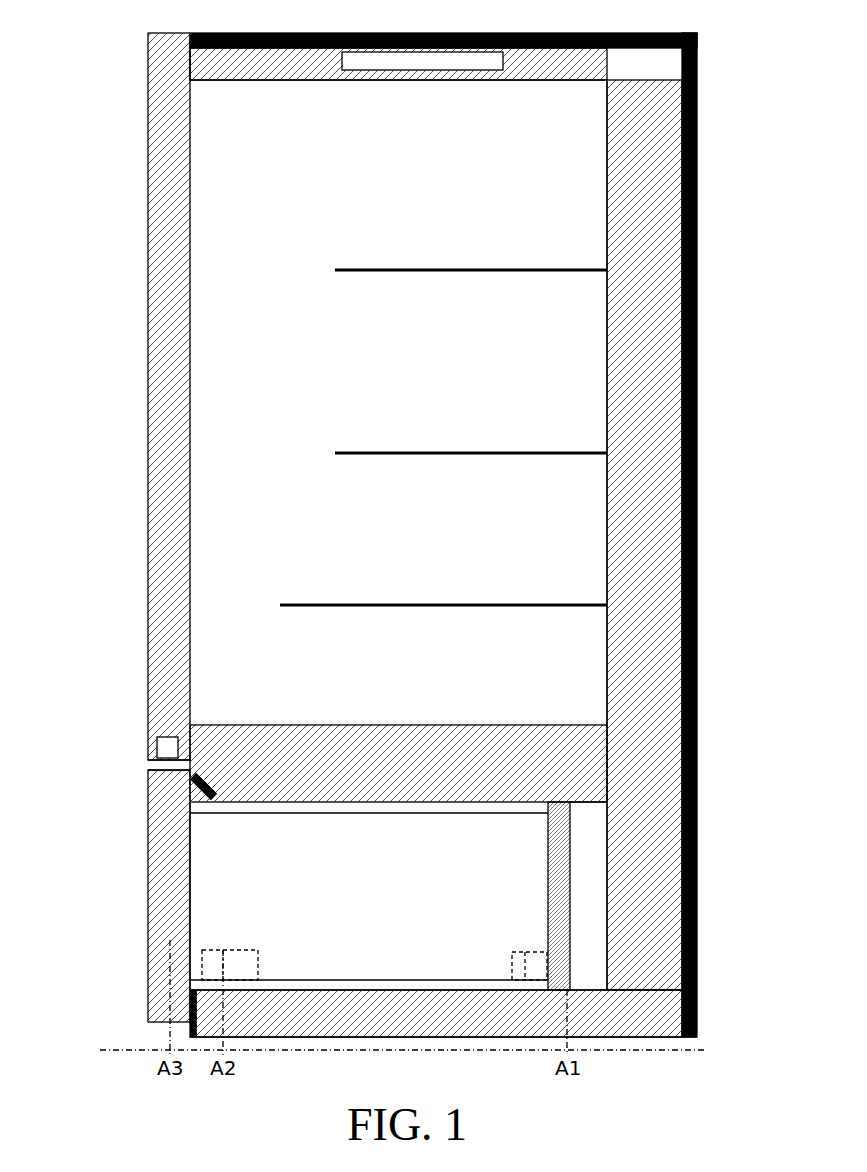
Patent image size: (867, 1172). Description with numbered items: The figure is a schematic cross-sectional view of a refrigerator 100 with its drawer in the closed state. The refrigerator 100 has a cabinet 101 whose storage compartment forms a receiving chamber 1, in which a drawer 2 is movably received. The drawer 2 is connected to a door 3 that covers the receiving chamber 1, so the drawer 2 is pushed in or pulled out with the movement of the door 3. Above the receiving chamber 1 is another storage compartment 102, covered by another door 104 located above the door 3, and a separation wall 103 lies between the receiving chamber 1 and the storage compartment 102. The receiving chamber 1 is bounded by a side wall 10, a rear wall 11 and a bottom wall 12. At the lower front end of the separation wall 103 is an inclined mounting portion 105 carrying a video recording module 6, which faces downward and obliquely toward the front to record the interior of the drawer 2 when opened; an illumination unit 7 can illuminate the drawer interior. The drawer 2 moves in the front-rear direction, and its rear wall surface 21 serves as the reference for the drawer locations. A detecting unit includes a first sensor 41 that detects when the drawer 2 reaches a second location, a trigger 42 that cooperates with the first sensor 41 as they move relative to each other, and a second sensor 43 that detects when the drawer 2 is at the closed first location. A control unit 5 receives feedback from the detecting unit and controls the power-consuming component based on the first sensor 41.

The refrigerator 100 is at (136, 101).
The cabinet 101 is at (663, 268).
The storage compartment 102 is at (443, 556).
The separation wall 103 is at (397, 733).
The door 104 is at (158, 486).
The mounting portion 105 is at (197, 773).
The receiving chamber 1 is at (585, 868).
The drawer 2 is at (398, 830).
The door 3 is at (155, 923).
The control unit 5 is at (456, 62).
The video recording module 6 is at (215, 785).
The illumination unit 7 is at (167, 750).
The side wall 10 is at (578, 840).
The rear wall 11 is at (633, 895).
The bottom wall 12 is at (315, 1007).
The rear wall surface 21 is at (558, 878).
The first sensor 41 is at (235, 950).
The trigger 42 is at (553, 965).
The second sensor 43 is at (510, 965).